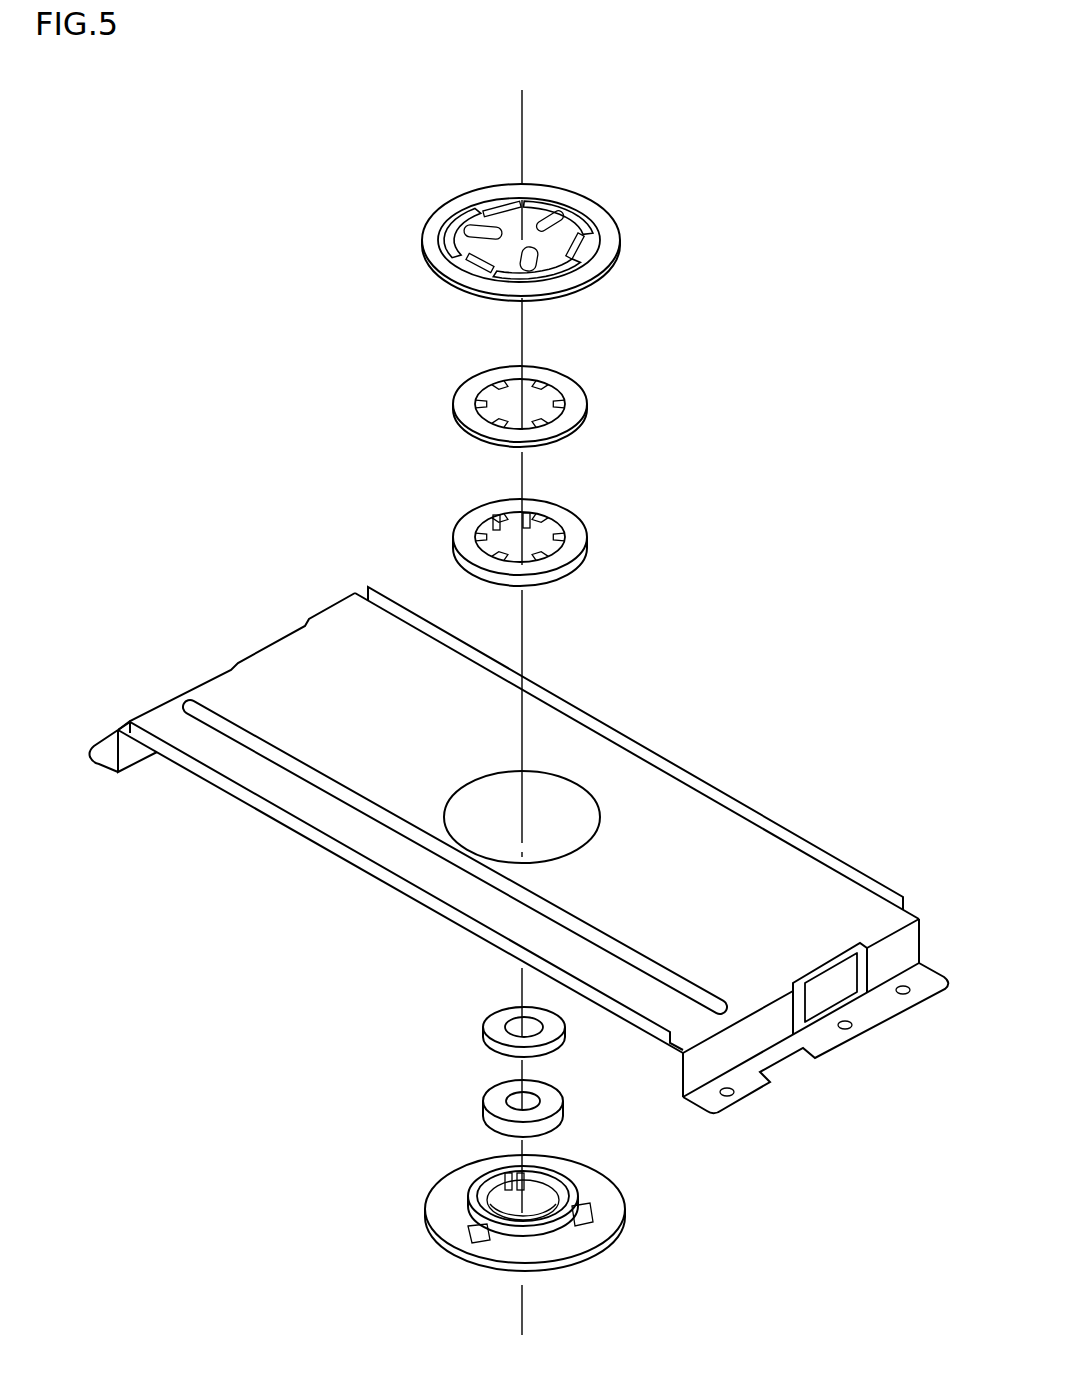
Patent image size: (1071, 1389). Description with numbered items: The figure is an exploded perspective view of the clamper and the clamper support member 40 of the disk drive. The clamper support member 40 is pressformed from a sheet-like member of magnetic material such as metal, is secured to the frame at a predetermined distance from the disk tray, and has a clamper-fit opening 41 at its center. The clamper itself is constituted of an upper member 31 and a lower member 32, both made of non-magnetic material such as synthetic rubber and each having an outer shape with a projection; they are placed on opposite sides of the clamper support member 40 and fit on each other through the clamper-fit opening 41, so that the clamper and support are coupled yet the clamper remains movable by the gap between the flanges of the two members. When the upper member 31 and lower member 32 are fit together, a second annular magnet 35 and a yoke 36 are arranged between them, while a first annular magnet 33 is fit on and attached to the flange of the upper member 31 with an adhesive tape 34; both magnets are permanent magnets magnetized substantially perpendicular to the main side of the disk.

The upper member 31 is at (590, 250).
The adhesive tape 34 is at (577, 402).
The first annular magnet 33 is at (577, 542).
The clamper support member 40 is at (519, 850).
The clamper-fit opening 41 is at (567, 780).
The yoke 36 is at (498, 1030).
The second annular magnet 35 is at (483, 1103).
The lower member 32 is at (445, 1219).